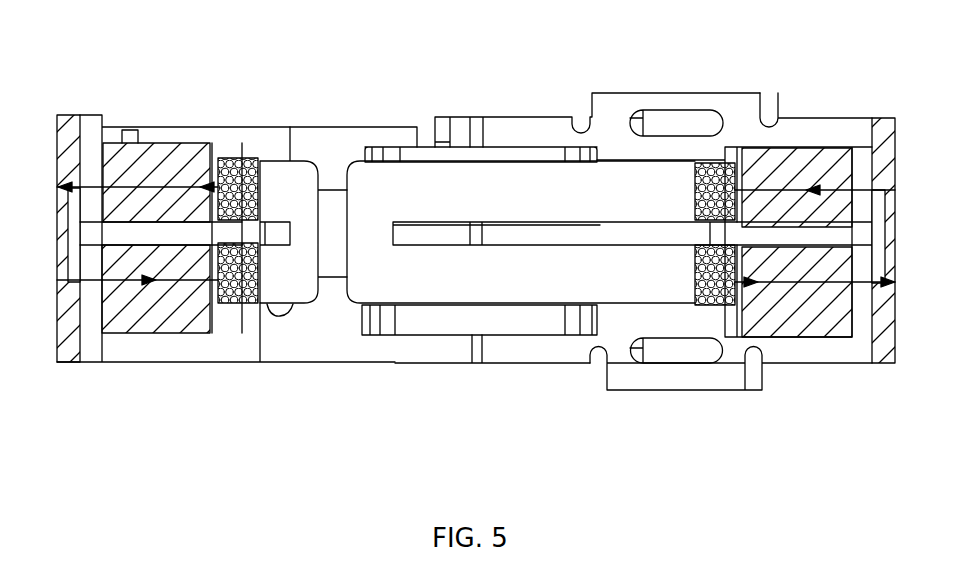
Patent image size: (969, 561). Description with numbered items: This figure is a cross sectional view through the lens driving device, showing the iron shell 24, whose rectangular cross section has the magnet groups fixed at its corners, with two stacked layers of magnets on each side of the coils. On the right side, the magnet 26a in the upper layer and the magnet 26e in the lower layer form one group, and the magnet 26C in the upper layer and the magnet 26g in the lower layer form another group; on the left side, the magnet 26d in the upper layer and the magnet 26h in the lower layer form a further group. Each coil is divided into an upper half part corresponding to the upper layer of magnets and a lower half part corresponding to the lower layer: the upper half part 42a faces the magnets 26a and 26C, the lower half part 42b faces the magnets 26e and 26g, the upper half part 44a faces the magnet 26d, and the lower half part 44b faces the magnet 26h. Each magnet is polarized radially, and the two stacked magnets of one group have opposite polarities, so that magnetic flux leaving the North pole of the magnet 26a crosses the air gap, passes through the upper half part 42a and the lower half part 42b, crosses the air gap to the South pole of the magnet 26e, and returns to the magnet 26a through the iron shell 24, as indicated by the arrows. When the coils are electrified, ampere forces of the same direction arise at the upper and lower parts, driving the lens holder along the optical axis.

The iron shell 24 is at (65, 345).
The magnet 26d is at (195, 163).
The magnet 26h is at (180, 290).
The upper half part of the coil 44 44a is at (233, 160).
The lower half part of the coil 44 44b is at (232, 305).
The magnet 26C is at (388, 150).
The magnet 26g is at (400, 313).
The upper half part of the coil 42 42a is at (712, 190).
The lower half part of the coil 42 42b is at (708, 300).
The magnet 26a is at (813, 178).
The magnet 26e is at (827, 297).